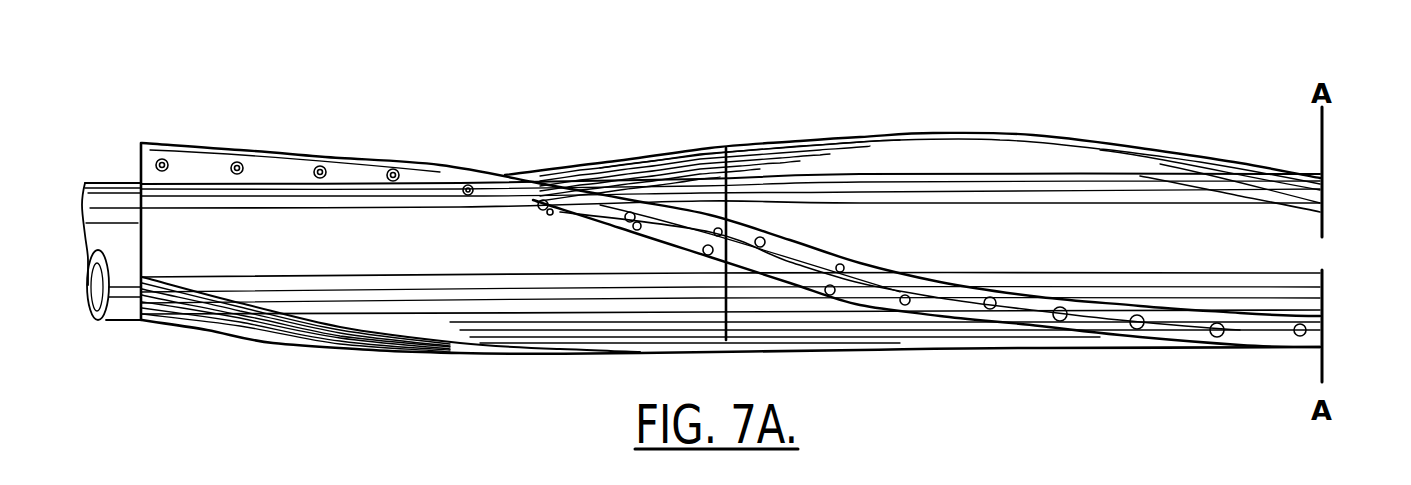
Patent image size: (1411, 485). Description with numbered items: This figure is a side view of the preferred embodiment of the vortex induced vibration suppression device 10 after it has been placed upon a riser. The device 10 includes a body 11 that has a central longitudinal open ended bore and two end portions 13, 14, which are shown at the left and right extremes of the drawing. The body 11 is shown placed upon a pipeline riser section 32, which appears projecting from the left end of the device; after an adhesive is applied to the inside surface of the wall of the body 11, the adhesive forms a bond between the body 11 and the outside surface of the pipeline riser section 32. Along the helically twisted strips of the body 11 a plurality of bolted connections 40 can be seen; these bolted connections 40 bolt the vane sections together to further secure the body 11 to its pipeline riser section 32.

The vortex induced vibration suppression device 10 is at (430, 112).
The body 11 is at (282, 203).
The end portion 13 is at (142, 233).
The end portion 14 is at (141, 210).
The pipeline riser section 32 is at (123, 303).
The bolted connection 40 is at (537, 207).